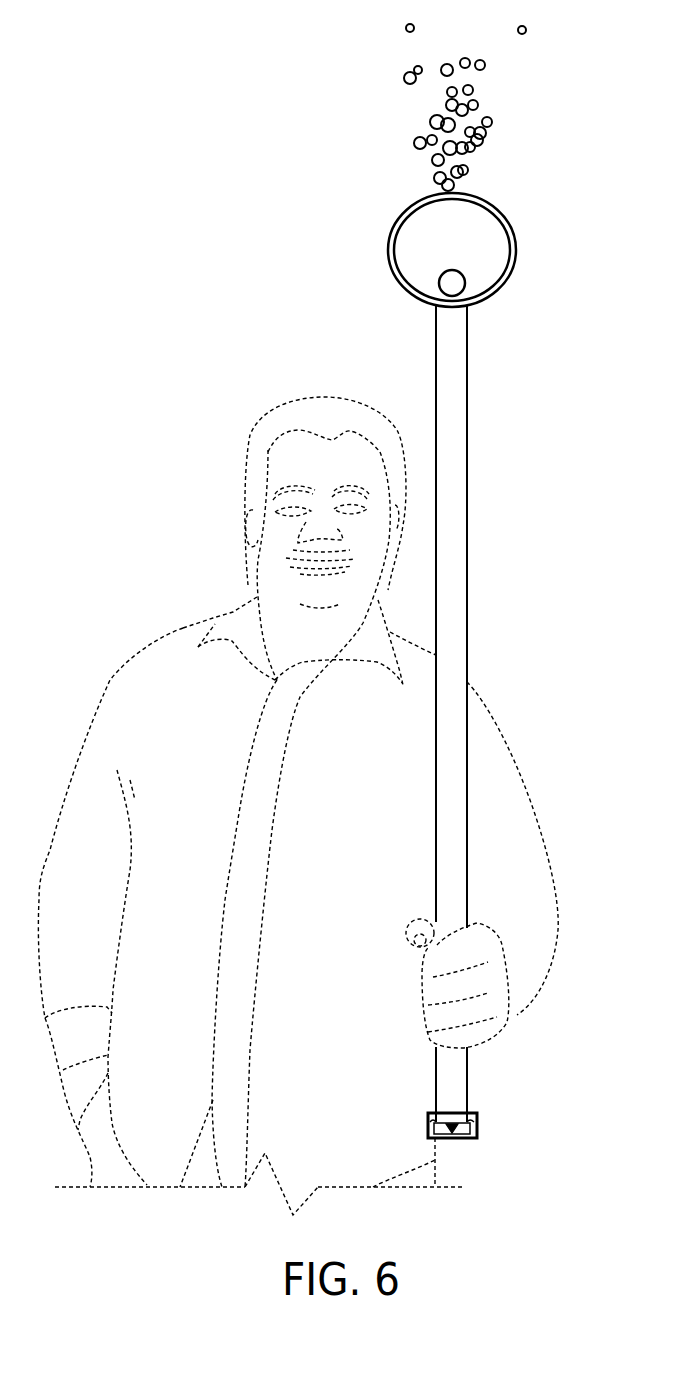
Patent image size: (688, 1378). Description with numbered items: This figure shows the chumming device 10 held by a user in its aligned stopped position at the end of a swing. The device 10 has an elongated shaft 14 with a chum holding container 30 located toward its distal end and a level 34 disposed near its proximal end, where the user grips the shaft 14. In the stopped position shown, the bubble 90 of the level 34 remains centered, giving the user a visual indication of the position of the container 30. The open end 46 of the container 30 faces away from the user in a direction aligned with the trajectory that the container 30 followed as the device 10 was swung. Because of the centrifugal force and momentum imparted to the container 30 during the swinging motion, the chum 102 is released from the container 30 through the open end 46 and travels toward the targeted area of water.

The chumming device 10 is at (469, 683).
The shaft 14 is at (467, 716).
The chum holding container 30 is at (469, 250).
The open end 46 is at (391, 275).
The level 34 is at (445, 1119).
The bubble 90 is at (455, 1136).
The chum 102 is at (485, 107).